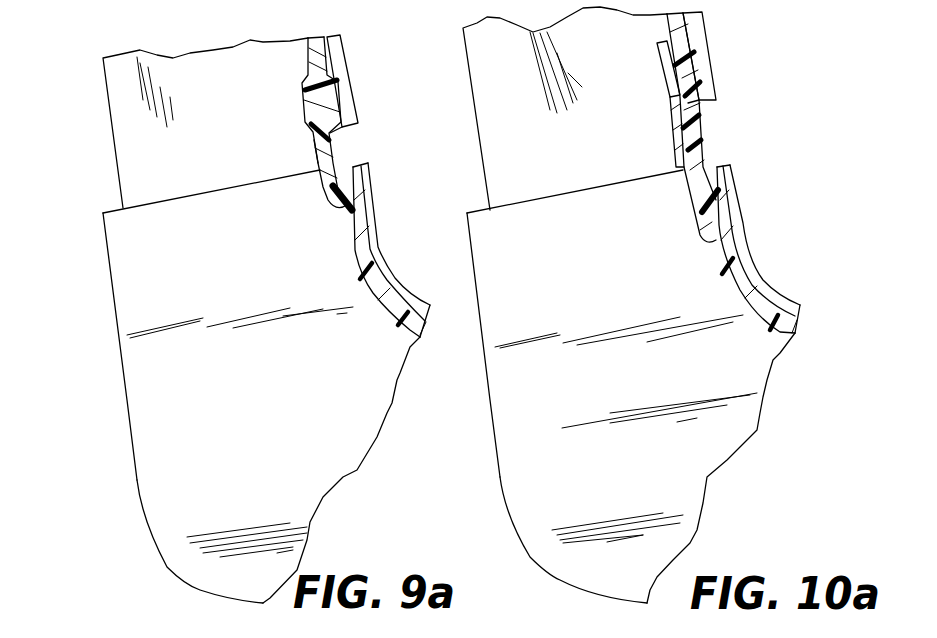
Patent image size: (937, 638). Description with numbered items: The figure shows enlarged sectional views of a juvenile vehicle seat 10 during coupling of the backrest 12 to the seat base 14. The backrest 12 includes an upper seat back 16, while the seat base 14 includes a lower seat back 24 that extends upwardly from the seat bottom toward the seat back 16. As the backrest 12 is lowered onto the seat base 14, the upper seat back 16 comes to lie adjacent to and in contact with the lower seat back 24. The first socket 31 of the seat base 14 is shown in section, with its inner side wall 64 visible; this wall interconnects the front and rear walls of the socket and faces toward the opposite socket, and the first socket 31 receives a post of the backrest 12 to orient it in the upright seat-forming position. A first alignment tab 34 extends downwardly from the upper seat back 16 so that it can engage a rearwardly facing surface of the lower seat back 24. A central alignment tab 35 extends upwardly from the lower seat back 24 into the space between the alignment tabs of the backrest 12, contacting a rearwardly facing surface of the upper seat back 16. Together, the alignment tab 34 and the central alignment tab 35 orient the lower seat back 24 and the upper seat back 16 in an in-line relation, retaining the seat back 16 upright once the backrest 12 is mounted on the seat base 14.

In FIG. 9A, the juvenile vehicle seat 10 is at (181, 123).
In FIG. 10A, the juvenile vehicle seat 10 is at (565, 108).
In FIG. 9A, the backrest 12 is at (358, 75).
In FIG. 10A, the backrest 12 is at (732, 57).
In FIG. 9A, the seat base 14 is at (130, 477).
In FIG. 10A, the seat base 14 is at (503, 513).
In FIG. 9A, the seat back 16 is at (307, 63).
In FIG. 10A, the seat back 16 is at (667, 32).
In FIG. 9A, the lower seat back 24 is at (355, 218).
In FIG. 10A, the lower seat back 24 is at (758, 249).
In FIG. 9A, the first socket 31 is at (110, 320).
In FIG. 10A, the first socket 31 is at (487, 392).
In FIG. 9A, the first alignment tab 34 is at (288, 154).
In FIG. 10A, the first alignment tab 34 is at (667, 78).
In FIG. 10A, the central alignment tab 35 is at (687, 117).
In FIG. 9A, the inner side wall 64 is at (240, 412).
In FIG. 10A, the inner side wall 64 is at (626, 410).